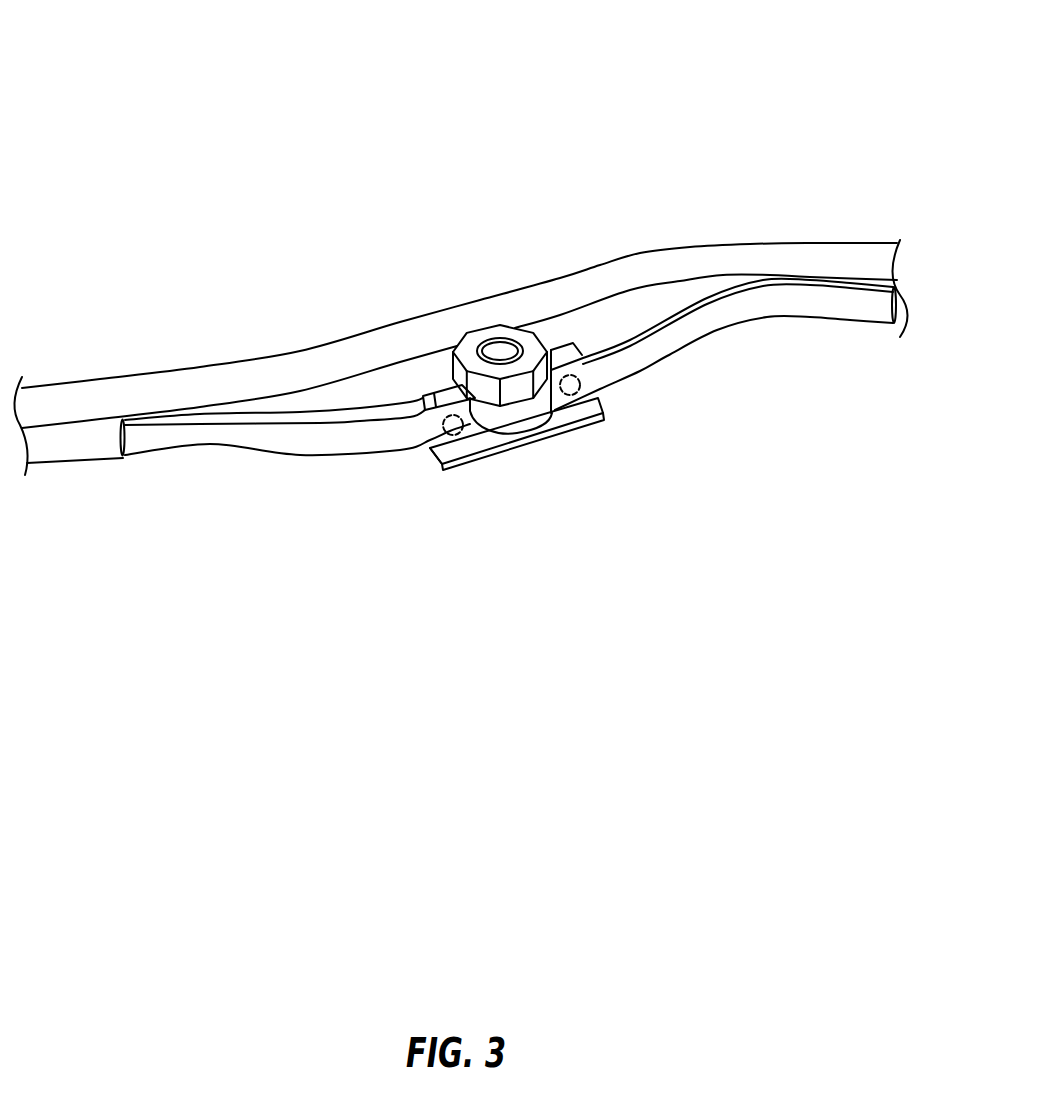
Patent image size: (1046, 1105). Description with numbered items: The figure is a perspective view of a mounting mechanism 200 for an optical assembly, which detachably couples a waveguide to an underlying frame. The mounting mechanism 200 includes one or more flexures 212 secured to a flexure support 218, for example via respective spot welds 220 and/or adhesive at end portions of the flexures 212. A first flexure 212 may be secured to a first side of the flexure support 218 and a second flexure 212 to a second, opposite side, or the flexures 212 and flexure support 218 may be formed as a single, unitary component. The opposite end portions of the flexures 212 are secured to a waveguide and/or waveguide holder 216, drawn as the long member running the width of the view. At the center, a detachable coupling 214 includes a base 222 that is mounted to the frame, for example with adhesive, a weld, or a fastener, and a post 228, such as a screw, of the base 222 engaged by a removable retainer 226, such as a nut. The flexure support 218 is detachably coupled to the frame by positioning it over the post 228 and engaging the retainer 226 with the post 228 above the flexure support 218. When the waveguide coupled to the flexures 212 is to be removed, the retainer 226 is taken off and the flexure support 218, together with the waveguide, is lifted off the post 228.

The mounting mechanism 200 is at (196, 77).
The flexure 212 is at (267, 442).
The detachable coupling 214 is at (574, 221).
The waveguide holder 216 is at (763, 255).
The flexure support 218 is at (438, 400).
The spot weld 220 is at (474, 419).
The base 222 is at (580, 422).
The removable retainer 226 is at (512, 335).
The post 228 is at (500, 348).